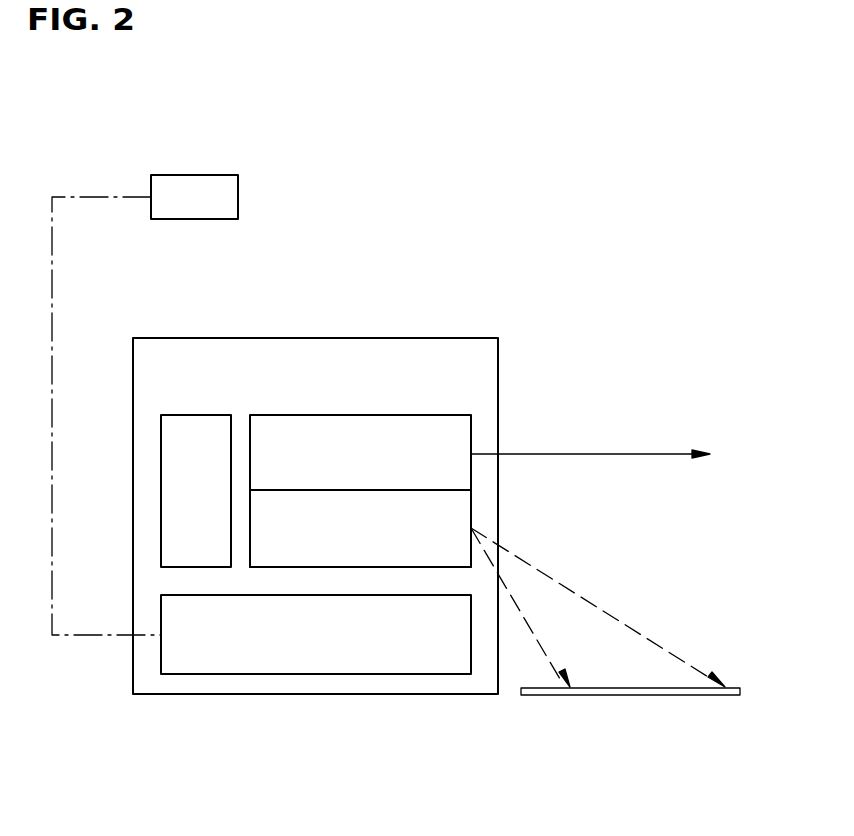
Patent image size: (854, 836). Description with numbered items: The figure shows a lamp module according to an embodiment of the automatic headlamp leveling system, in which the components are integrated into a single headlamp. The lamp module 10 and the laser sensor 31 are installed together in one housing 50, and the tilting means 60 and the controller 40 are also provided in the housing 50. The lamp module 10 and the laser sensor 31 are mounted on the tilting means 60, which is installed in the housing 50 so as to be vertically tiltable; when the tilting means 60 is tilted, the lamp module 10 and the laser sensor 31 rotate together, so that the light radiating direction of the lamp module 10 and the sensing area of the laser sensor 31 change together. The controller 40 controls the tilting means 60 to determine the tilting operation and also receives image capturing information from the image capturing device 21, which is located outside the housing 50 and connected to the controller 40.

The image capturing device 21 is at (205, 180).
The housing 50 is at (476, 320).
The tilting means 60 is at (201, 428).
The lamp module 10 is at (370, 430).
The laser sensor 31 is at (462, 510).
The controller 40 is at (234, 667).